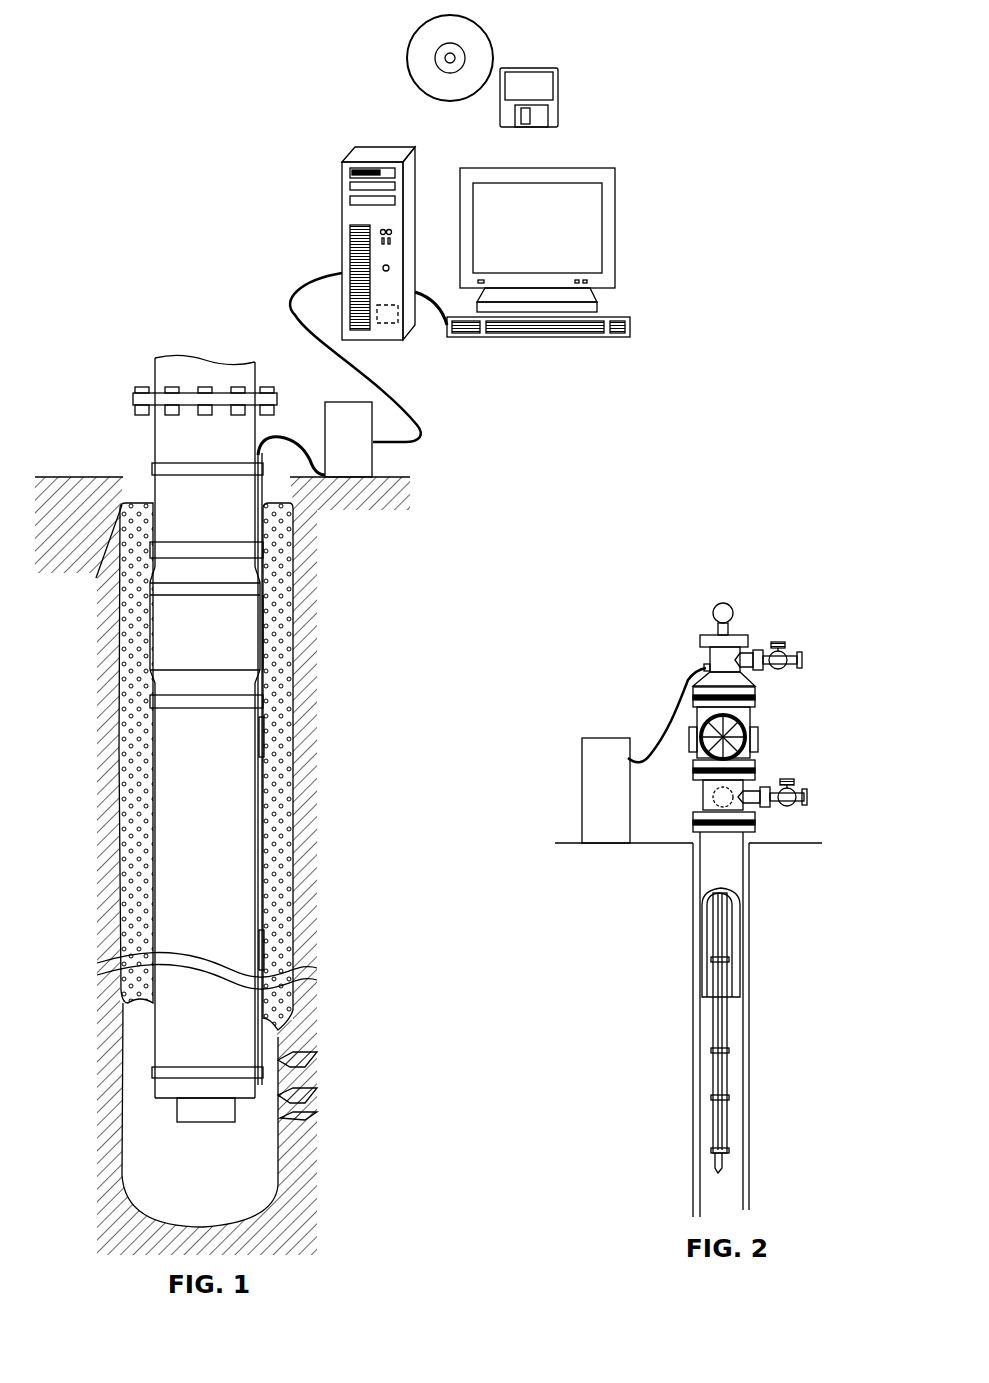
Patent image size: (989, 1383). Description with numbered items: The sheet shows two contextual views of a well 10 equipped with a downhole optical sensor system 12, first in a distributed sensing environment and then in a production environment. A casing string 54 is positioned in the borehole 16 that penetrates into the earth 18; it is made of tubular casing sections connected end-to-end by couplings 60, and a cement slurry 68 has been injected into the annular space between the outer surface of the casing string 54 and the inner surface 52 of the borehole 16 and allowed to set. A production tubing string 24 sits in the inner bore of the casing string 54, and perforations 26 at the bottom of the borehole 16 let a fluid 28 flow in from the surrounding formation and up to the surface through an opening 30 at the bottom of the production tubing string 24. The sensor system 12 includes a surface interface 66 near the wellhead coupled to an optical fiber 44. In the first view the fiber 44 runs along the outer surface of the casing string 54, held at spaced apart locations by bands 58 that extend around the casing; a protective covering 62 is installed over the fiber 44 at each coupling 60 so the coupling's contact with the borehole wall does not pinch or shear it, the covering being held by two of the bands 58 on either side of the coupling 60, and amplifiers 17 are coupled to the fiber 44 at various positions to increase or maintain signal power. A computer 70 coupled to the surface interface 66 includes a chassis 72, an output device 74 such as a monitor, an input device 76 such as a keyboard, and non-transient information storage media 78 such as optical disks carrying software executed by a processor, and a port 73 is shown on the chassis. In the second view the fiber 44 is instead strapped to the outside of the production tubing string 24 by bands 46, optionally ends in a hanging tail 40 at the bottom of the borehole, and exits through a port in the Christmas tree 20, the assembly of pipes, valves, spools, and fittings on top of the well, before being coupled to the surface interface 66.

In FIG. 1, the well 10 is at (112, 276).
In FIG. 1, the downhole optical sensor system 12 is at (288, 236).
In FIG. 2, the downhole optical sensor system 12 is at (618, 662).
In FIG. 1, the borehole 16 is at (135, 474).
In FIG. 1, the amplifiers 17 is at (265, 745).
In FIG. 1, the earth 18 is at (74, 515).
In FIG. 2, the Christmas tree 20 is at (820, 637).
In FIG. 1, the production tubing string 24 is at (192, 1113).
In FIG. 2, the production tubing string 24 is at (729, 1073).
In FIG. 1, the perforations 26 is at (328, 1015).
In FIG. 1, the fluid 28 is at (280, 1105).
In FIG. 1, the opening 30 is at (200, 1128).
In FIG. 2, the hanging tail 40 is at (722, 1180).
In FIG. 1, the optical fiber 44 is at (278, 440).
In FIG. 2, the optical fiber 44 is at (672, 720).
In FIG. 2, the bands 46 is at (729, 958).
In FIG. 1, the inner surface of the borehole 52 is at (293, 577).
In FIG. 1, the casing string 54 is at (155, 452).
In FIG. 2, the casing string 54 is at (743, 883).
In FIG. 1, the bands 58 is at (188, 463).
In FIG. 1, the couplings 60 is at (242, 648).
In FIG. 1, the protective covering 62 is at (263, 623).
In FIG. 1, the surface interface 66 is at (372, 467).
In FIG. 2, the surface interface 66 is at (582, 808).
In FIG. 1, the cement slurry 68 is at (287, 818).
In FIG. 1, the computer 70 is at (598, 86).
In FIG. 1, the chassis 72 is at (415, 182).
In FIG. 1, the port 73 is at (388, 328).
In FIG. 1, the output device 74 is at (615, 238).
In FIG. 1, the input device 76 is at (610, 315).
In FIG. 1, the non-transient information storage media 78 is at (513, 65).